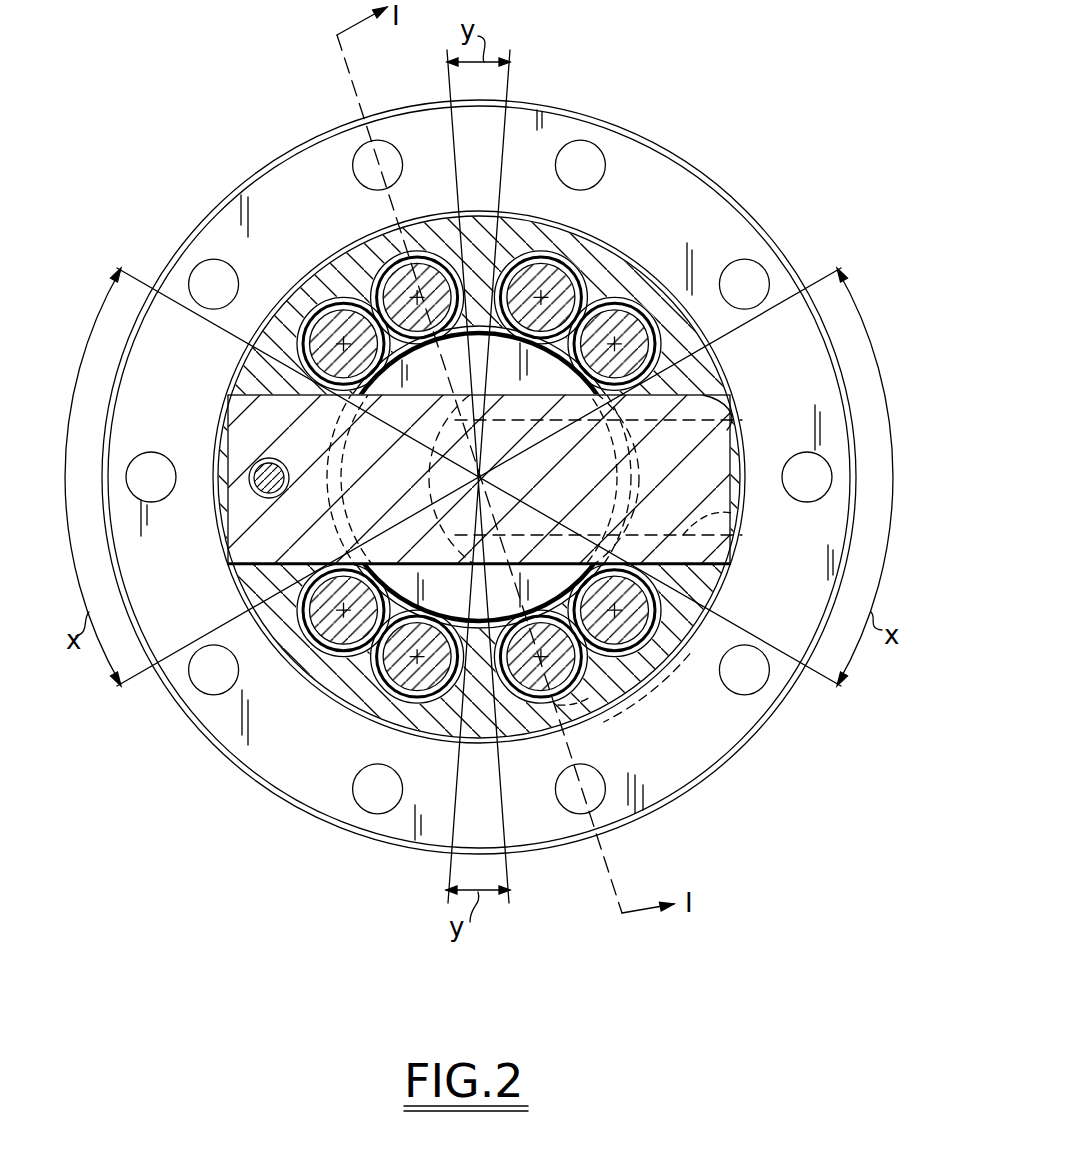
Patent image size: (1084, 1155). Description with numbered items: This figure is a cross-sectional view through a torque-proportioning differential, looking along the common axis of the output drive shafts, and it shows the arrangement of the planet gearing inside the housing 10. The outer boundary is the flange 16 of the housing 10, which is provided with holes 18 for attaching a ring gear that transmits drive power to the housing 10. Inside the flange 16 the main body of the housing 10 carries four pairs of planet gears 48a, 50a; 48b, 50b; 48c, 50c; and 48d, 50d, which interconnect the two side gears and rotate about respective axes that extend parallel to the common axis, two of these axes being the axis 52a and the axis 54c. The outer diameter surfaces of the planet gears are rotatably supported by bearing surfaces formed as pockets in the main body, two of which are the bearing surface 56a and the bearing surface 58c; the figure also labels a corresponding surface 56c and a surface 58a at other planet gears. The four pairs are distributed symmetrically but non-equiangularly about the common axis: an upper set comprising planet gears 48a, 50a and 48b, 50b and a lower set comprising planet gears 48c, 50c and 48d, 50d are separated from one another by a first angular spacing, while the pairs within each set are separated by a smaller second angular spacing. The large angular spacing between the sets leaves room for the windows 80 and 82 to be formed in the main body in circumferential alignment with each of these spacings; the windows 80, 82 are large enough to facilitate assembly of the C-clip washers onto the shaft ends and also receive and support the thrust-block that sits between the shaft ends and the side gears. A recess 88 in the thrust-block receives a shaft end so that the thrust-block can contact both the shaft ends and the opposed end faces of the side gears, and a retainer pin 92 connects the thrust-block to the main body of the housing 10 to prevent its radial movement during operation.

The housing 10 is at (575, 102).
The flange 16 is at (723, 242).
The holes 18 is at (152, 452).
The planet gear 48a is at (395, 252).
The planet gear 48b is at (652, 347).
The planet gear 48c is at (552, 702).
The planet gear 48d is at (258, 592).
The planet gear 50a is at (262, 346).
The planet gear 50b is at (577, 268).
The planet gear 50c is at (662, 604).
The planet gear 50d is at (381, 692).
The axis of rotation of planet gear 52a is at (375, 255).
The axis of rotation of planet gear 54c is at (622, 697).
The bearing surface 56a is at (505, 262).
The roller sleeve 56c is at (567, 740).
The roller ring 58a is at (318, 290).
The bearing surface 58c is at (681, 658).
The window 80 is at (722, 426).
The window 82 is at (222, 546).
The recess 88 is at (705, 520).
The retainer pin 92 is at (226, 412).